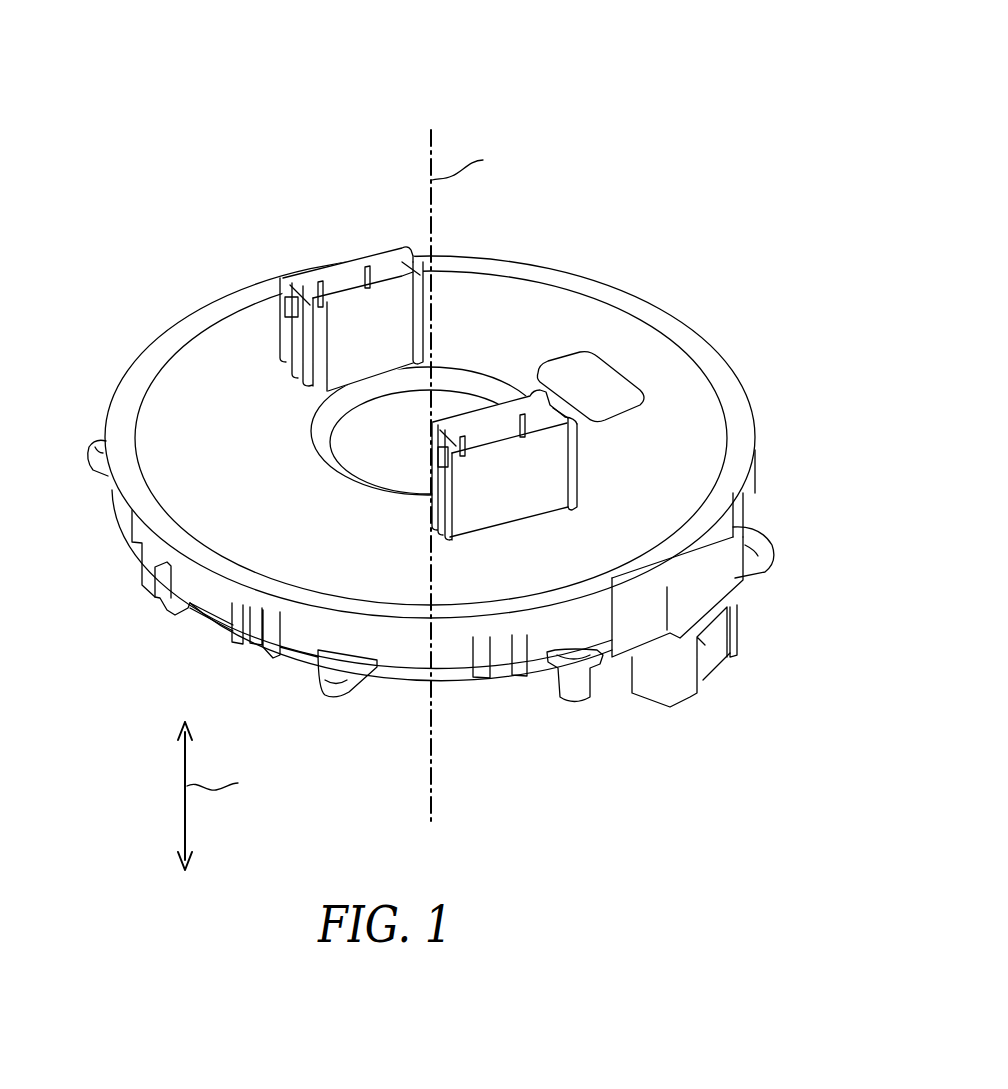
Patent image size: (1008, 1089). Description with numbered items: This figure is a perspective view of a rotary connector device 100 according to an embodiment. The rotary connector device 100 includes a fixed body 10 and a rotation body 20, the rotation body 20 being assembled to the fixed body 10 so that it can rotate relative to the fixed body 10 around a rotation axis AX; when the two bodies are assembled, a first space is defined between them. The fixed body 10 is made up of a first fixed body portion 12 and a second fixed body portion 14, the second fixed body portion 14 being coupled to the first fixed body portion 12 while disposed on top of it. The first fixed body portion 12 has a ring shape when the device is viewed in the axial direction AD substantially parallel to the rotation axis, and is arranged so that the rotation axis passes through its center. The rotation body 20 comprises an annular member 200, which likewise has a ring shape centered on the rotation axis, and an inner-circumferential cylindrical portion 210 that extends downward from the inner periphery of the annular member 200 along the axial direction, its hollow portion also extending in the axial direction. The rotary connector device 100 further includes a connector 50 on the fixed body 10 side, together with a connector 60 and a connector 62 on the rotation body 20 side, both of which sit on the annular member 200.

The rotary connector device 100 is at (633, 92).
The fixed body 10 is at (498, 762).
The first fixed body portion 12 is at (437, 650).
The second fixed body portion 14 is at (468, 621).
The rotation body 20 is at (38, 306).
The annular member 200 is at (175, 418).
The inner-circumferential cylindrical portion 210 is at (353, 459).
The connector 50 is at (705, 648).
The connector 60 is at (347, 277).
The connector 62 is at (500, 427).